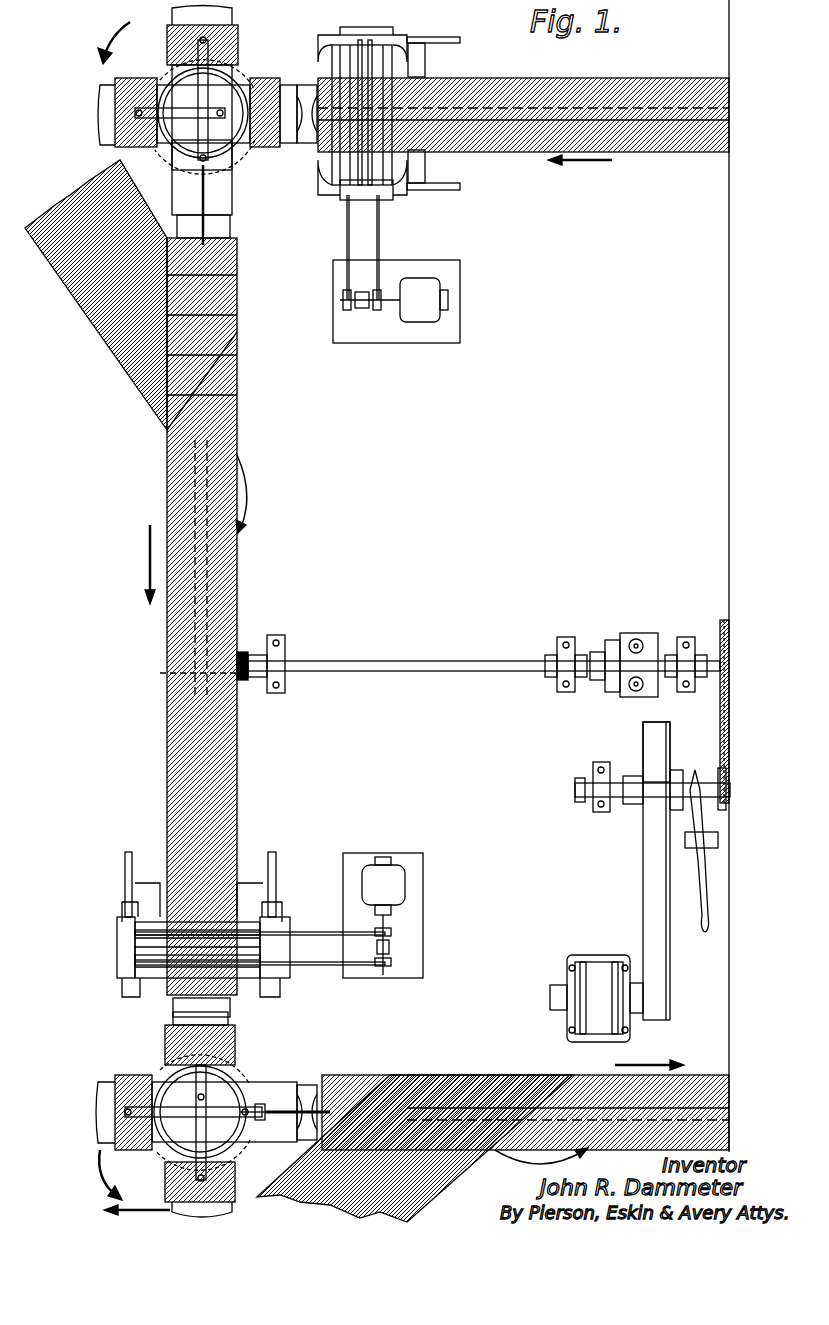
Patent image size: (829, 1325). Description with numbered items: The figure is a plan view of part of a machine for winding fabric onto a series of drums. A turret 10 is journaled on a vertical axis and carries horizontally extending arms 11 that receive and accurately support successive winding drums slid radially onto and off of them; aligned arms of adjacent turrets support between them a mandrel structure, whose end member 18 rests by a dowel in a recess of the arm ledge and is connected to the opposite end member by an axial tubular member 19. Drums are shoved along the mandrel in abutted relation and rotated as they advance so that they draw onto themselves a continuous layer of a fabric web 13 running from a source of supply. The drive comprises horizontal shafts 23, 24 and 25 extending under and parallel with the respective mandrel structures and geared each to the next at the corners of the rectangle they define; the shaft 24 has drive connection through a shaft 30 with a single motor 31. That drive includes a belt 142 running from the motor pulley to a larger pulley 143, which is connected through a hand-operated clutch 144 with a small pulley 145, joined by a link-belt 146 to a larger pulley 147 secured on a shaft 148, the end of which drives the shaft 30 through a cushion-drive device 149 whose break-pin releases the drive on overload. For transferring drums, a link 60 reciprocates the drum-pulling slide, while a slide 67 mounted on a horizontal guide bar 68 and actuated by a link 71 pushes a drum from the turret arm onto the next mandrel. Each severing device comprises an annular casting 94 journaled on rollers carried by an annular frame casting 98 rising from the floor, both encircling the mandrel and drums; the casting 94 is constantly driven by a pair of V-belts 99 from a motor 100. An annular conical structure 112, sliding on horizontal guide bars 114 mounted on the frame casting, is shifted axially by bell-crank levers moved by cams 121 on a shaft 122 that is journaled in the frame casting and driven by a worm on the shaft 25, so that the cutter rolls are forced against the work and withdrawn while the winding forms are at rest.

The turret 10 is at (240, 80).
The arm 11 is at (235, 22).
The fabric web 13 is at (90, 315).
The end member 18 is at (305, 88).
The axial tubular member 19 is at (305, 140).
The shaft 23 is at (668, 110).
The shaft 24 is at (235, 590).
The shaft 25 is at (508, 1095).
The shaft 30 is at (410, 662).
The motor 31 is at (595, 970).
The link 60 is at (160, 150).
The slide 67 is at (225, 170).
The horizontal guide bar 68 is at (230, 220).
The link 71 is at (203, 135).
The annular casting 94 is at (342, 165).
The annular frame casting 98 is at (345, 150).
The V-belt 99 is at (347, 238).
The motor 100 is at (425, 312).
The annular structure 112 is at (365, 85).
The horizontal guide bar 114 is at (340, 35).
The cam 121 is at (460, 38).
The shaft 122 is at (425, 155).
The belt 142 is at (648, 870).
The pulley 143 is at (640, 832).
The hand-operated clutch 144 is at (698, 770).
The small pulley 145 is at (732, 797).
The link-belt 146 is at (730, 748).
The pulley 147 is at (732, 702).
The shaft 148 is at (708, 678).
The cushion-drive device 149 is at (618, 635).